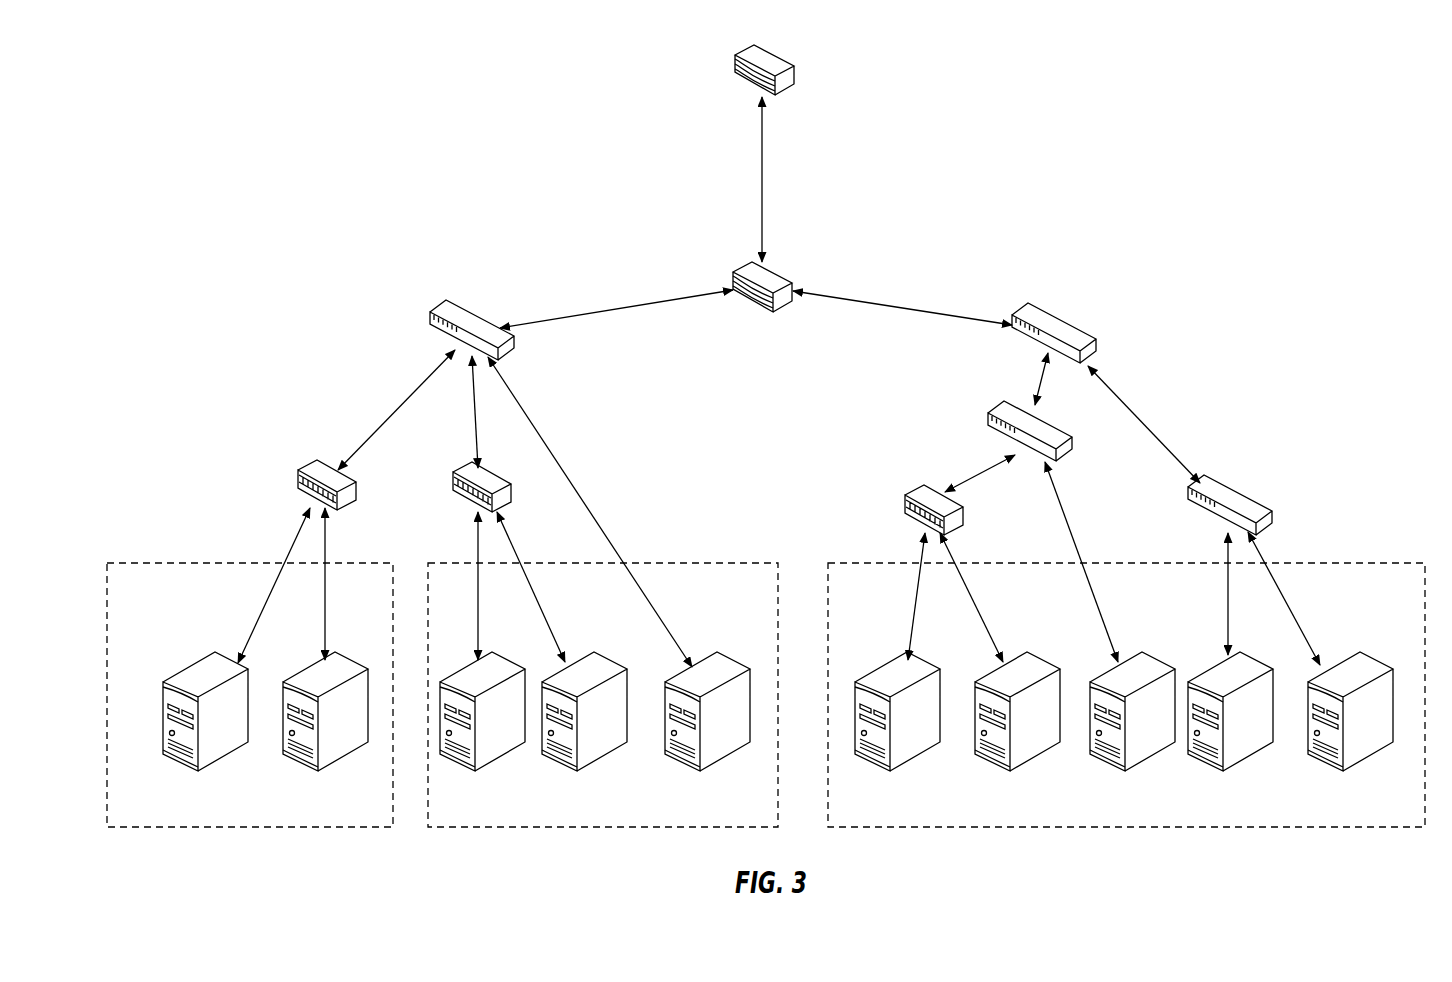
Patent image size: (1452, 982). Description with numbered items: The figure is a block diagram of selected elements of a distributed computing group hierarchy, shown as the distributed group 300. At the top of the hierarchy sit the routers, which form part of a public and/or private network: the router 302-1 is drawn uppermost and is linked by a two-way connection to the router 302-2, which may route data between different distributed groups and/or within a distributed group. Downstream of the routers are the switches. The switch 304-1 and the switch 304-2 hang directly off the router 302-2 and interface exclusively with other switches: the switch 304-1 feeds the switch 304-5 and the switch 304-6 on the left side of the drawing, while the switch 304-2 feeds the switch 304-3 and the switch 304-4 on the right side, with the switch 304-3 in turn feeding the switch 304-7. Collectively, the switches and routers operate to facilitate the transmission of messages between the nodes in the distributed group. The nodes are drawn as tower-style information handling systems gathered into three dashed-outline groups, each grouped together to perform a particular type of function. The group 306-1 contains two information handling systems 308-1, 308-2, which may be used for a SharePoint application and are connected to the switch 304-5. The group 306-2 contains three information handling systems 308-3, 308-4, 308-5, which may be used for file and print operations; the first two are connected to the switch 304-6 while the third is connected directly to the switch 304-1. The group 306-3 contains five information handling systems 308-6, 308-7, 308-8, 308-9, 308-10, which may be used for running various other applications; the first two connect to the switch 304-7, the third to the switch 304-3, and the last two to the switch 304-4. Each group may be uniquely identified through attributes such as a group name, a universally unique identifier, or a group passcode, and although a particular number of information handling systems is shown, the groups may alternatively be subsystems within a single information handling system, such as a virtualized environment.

The distributed group 300 is at (1152, 100).
The router 302-1 is at (772, 57).
The router 302-2 is at (772, 273).
The switch 304-1 is at (457, 306).
The switch 304-2 is at (1041, 308).
The switch 304-3 is at (1003, 402).
The switch 304-4 is at (1227, 483).
The switch 304-5 is at (317, 460).
The switch 304-6 is at (472, 461).
The switch 304-7 is at (924, 485).
The group 306-1 is at (185, 562).
The group 306-2 is at (708, 562).
The group 306-3 is at (1346, 562).
The information handling system 308-1 is at (208, 768).
The information handling system 308-2 is at (297, 768).
The information handling system 308-3 is at (517, 752).
The information handling system 308-4 is at (556, 770).
The information handling system 308-5 is at (679, 770).
The information handling system 308-6 is at (865, 768).
The information handling system 308-7 is at (985, 768).
The information handling system 308-8 is at (1100, 768).
The information handling system 308-9 is at (1198, 768).
The information handling system 308-10 is at (1318, 768).